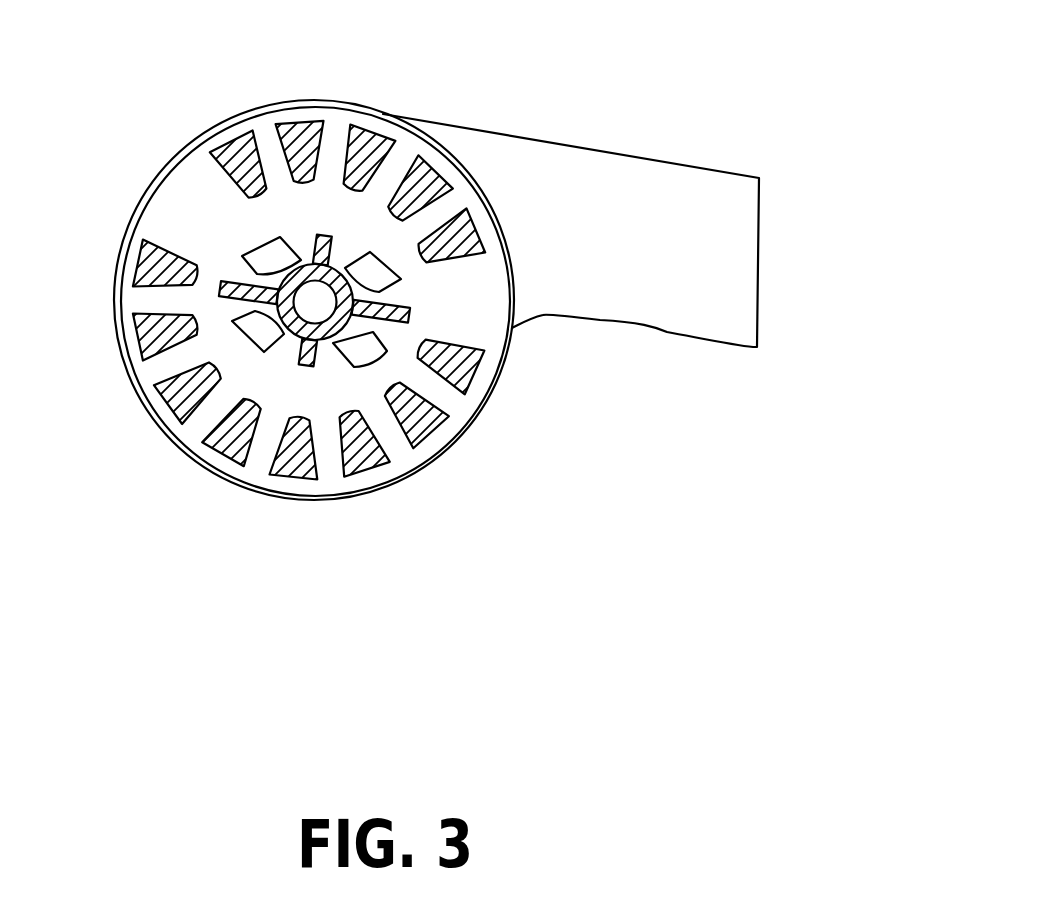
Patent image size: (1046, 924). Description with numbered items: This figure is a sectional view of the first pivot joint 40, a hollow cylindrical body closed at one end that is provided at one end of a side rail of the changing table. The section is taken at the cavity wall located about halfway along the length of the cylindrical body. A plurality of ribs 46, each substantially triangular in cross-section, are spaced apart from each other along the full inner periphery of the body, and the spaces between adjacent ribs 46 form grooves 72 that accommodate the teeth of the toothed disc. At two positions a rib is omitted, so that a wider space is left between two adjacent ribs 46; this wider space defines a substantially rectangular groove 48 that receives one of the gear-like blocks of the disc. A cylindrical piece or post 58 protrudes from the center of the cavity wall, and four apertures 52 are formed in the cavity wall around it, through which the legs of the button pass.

The first pivot joint 40 is at (297, 97).
The ribs 46 is at (232, 160).
The rectangular groove 48 is at (192, 212).
The apertures 52 is at (350, 352).
The post 58 is at (338, 268).
The grooves 72 is at (202, 418).